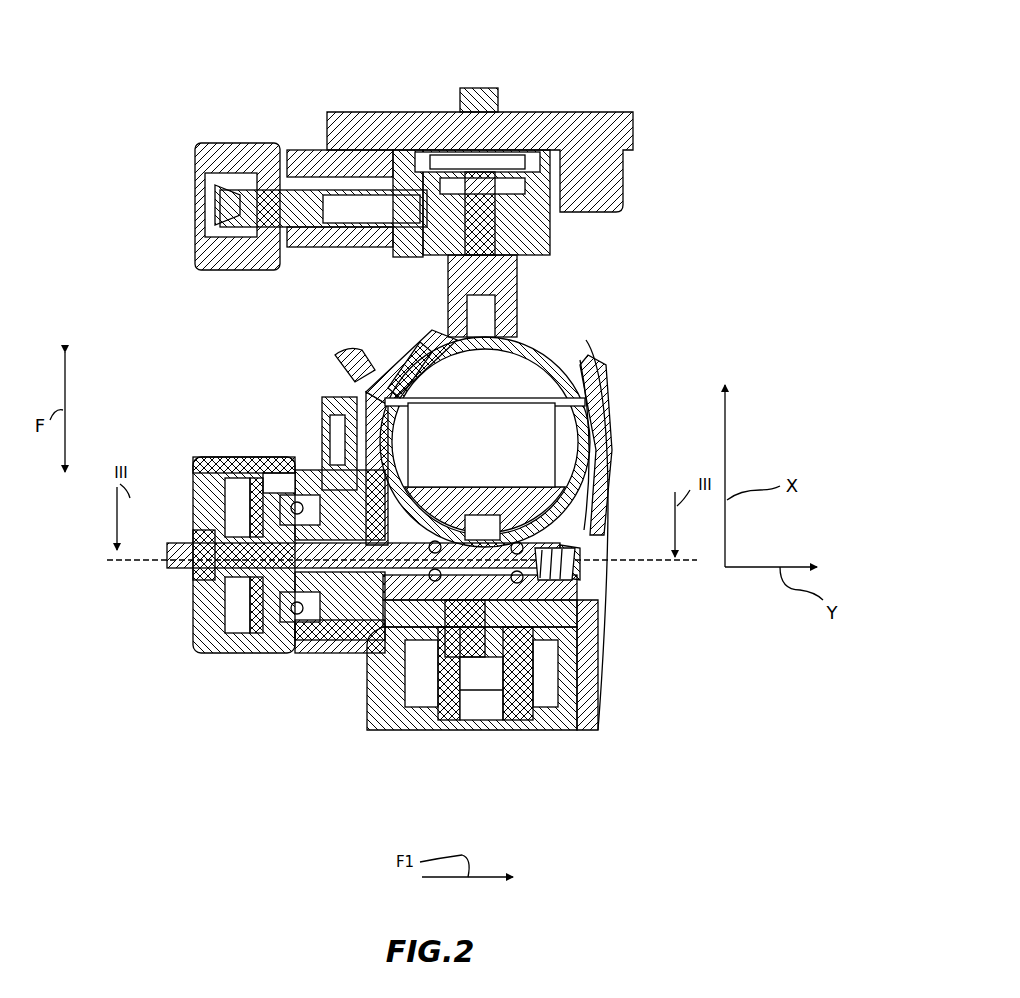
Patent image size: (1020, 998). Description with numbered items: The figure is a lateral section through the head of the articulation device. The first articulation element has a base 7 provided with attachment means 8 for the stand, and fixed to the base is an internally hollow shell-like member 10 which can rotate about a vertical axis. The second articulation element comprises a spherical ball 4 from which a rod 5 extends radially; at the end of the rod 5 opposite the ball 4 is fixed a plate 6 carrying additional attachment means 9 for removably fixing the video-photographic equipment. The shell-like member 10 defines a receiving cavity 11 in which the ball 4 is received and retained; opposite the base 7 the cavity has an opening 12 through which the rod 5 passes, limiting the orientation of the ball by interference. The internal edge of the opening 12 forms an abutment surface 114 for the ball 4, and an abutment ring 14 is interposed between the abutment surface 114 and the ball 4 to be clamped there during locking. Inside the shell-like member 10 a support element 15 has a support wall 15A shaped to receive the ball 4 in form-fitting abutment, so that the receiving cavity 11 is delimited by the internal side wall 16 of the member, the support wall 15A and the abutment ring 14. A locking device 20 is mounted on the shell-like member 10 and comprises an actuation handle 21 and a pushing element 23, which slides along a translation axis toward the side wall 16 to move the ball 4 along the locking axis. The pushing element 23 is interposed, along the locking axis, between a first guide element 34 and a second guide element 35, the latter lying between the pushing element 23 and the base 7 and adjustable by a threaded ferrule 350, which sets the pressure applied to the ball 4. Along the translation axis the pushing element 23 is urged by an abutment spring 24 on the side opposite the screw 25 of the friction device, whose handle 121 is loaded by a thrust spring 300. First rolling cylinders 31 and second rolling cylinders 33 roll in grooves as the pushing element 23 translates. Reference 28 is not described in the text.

The spherical ball 4 is at (570, 369).
The rod 5 is at (518, 294).
The plate 6 is at (607, 105).
The base 7 is at (397, 735).
The attachment means 8 is at (478, 705).
The additional attachment means 9 is at (298, 118).
The shell-like member 10 is at (598, 660).
The receiving cavity 11 is at (610, 404).
The opening 12 is at (402, 340).
The abutment ring 14 is at (380, 364).
The support element 15 is at (613, 507).
The support wall 15A is at (320, 495).
The internal side wall 16 is at (320, 472).
The locking device 20 is at (300, 657).
The actuation handle 21 is at (197, 653).
The pushing element 23 is at (463, 735).
The abutment spring 24 is at (610, 572).
The screw 25 is at (257, 653).
The shaft 28 is at (207, 583).
The first rolling cylinders 31 is at (515, 540).
The second rolling cylinders 33 is at (533, 735).
The first guide element 34 is at (590, 547).
The second guide element 35 is at (323, 660).
The abutment surface 114 is at (338, 366).
The handle 121 is at (200, 620).
The thrust spring 300 is at (213, 459).
The threaded ferrule 350 is at (373, 679).